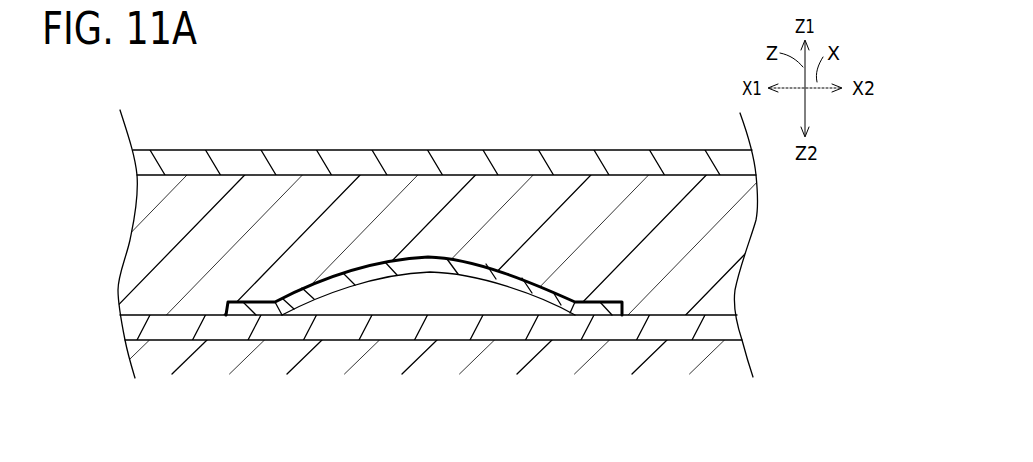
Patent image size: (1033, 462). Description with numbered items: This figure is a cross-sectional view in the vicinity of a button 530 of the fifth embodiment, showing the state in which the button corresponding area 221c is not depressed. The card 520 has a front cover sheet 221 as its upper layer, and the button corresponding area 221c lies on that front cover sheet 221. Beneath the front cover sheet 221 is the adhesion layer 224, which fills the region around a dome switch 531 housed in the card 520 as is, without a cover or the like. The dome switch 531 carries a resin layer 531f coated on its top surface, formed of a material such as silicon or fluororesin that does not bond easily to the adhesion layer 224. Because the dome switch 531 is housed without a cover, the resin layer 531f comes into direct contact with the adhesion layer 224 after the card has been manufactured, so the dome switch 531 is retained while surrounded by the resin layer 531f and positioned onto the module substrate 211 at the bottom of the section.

The card 520 is at (657, 75).
The front cover sheet 221 is at (444, 122).
The button corresponding area 221c is at (499, 136).
The adhesion layer 224 is at (737, 358).
The module substrate 211 is at (178, 330).
The button 530 is at (416, 256).
The dome switch 531 is at (424, 256).
The resin layer 531f is at (380, 263).